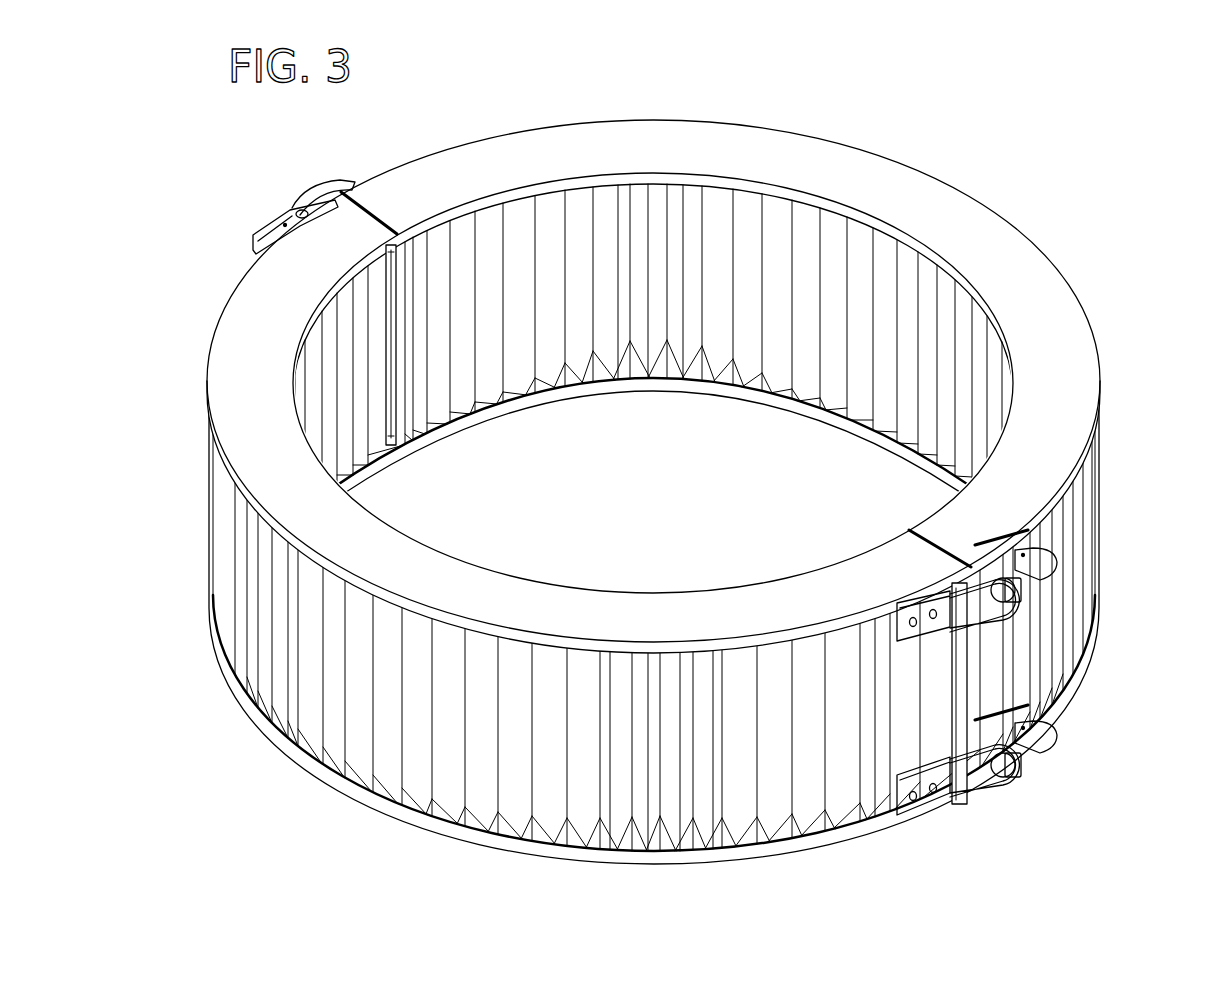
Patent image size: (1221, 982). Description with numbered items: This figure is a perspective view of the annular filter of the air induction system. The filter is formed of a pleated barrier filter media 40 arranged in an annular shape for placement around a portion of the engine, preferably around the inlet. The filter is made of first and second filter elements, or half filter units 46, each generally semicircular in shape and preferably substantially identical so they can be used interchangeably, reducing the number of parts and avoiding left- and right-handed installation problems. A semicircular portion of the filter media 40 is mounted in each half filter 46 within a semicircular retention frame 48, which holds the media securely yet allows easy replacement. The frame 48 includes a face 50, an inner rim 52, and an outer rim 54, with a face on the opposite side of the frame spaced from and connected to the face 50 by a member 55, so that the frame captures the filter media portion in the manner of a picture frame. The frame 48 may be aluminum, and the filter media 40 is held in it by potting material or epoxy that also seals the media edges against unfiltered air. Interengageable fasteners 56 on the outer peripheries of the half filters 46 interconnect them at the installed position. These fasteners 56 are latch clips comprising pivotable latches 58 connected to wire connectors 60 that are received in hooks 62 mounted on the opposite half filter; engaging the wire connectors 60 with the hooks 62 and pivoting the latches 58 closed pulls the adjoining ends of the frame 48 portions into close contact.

The pleated barrier filter media 40 is at (648, 473).
The half filter unit 46 is at (815, 138).
The retention frame 48 is at (632, 358).
The face 50 is at (940, 218).
The inner rim 52 is at (678, 182).
The outer rim 54 is at (632, 655).
The member 55 is at (412, 312).
The interengageable fastener 56 is at (692, 508).
The pivotable latch 58 is at (1053, 558).
The wire connector 60 is at (992, 620).
The hook 62 is at (940, 600).